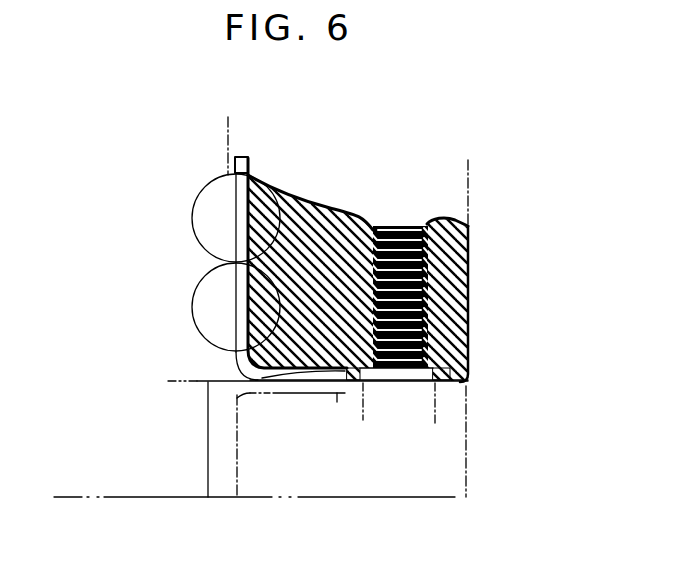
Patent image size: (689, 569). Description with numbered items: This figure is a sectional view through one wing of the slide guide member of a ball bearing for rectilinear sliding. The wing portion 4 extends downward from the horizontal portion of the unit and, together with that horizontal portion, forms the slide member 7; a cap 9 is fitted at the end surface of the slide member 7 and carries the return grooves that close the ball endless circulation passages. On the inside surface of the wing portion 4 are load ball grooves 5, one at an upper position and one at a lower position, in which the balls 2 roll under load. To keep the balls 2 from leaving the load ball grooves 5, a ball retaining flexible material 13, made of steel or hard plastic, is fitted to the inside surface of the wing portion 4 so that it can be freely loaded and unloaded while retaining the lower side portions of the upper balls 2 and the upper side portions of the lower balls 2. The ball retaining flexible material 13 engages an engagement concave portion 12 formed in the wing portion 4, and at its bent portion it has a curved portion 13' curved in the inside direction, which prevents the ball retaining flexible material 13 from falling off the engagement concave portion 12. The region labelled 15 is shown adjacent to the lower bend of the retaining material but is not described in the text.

The balls 2 is at (247, 262).
The wing portion 4 is at (468, 320).
The load ball groove 5 is at (268, 260).
The slide member 7 is at (490, 226).
The cap 9 is at (455, 497).
The engagement concave portion 12 is at (295, 364).
The ball retaining flexible material 13 is at (201, 265).
The curved portion 13' is at (359, 464).
The support step 15 is at (250, 393).